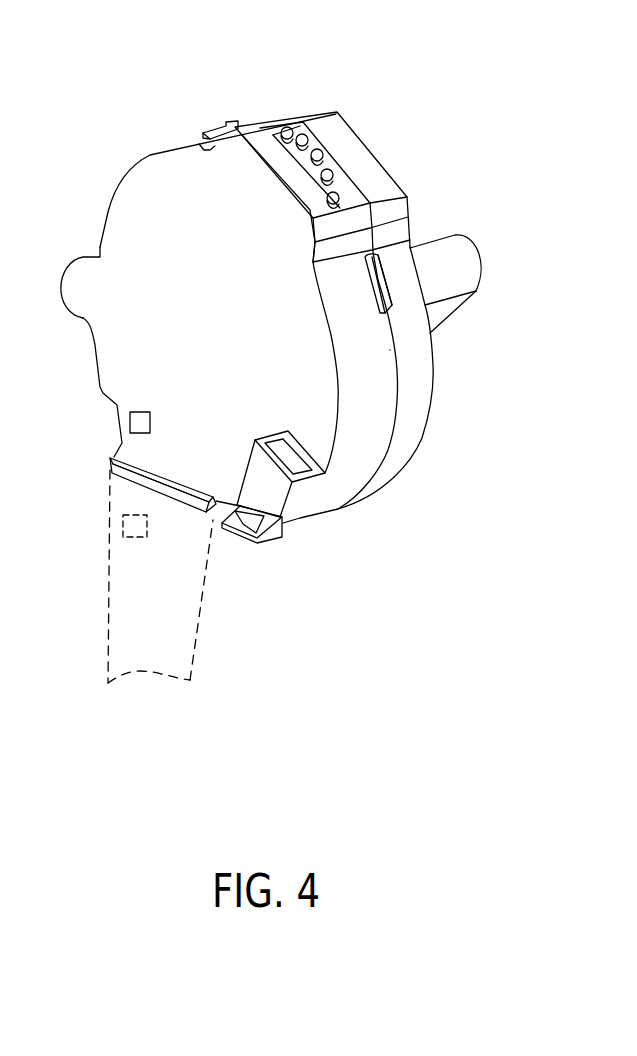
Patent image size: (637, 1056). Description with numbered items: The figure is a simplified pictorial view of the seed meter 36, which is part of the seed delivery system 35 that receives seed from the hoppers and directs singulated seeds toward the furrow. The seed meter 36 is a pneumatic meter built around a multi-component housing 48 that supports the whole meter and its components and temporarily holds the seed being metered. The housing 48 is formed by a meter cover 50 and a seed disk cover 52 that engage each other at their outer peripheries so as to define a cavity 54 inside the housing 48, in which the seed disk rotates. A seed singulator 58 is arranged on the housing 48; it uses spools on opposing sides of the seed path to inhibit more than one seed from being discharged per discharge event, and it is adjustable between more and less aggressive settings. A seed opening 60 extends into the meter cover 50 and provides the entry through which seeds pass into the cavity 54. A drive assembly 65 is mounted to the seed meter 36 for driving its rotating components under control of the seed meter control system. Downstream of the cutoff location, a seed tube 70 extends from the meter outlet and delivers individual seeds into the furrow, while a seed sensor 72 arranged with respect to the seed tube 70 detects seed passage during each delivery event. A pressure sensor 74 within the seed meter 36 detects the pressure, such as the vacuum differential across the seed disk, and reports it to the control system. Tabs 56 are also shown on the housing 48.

The seed delivery system 35 is at (348, 99).
The seed meter 36 is at (297, 116).
The multi-component housing 48 is at (405, 343).
The meter cover 50 is at (181, 173).
The seed disk cover 52 is at (405, 442).
The cavity 54 is at (393, 376).
The tab 56 is at (208, 127).
The seed singulator 58 is at (348, 166).
The seed opening 60 is at (291, 458).
The drive assembly 65 is at (80, 253).
The seed tube 70 is at (178, 652).
The seed sensor 72 is at (128, 525).
The pressure sensor 74 is at (139, 422).